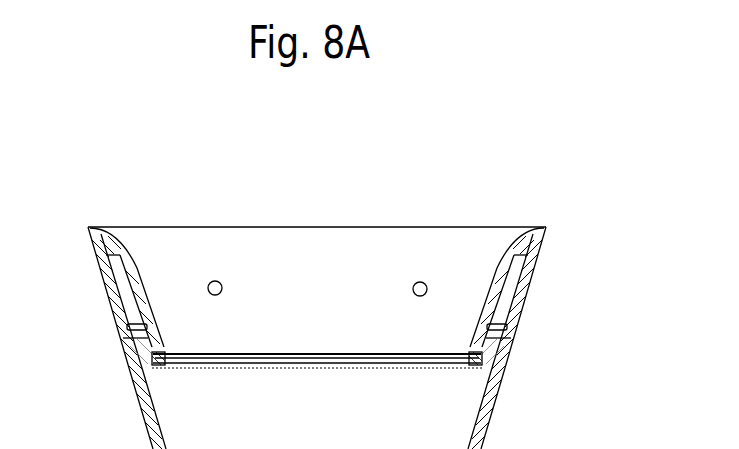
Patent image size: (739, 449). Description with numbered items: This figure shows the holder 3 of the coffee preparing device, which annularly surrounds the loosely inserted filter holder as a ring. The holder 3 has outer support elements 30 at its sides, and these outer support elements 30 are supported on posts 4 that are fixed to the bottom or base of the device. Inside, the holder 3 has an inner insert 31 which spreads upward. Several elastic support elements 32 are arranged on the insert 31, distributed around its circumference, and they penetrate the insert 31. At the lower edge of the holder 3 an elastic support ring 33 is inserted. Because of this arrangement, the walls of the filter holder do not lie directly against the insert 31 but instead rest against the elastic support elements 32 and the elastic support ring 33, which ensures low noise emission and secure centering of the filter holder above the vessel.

The holder 3 is at (561, 194).
The outer support elements 30 is at (112, 297).
The inner insert 31 is at (145, 283).
The elastic support elements 32 is at (216, 281).
The elastic support ring 33 is at (478, 358).
The posts 4 is at (162, 434).